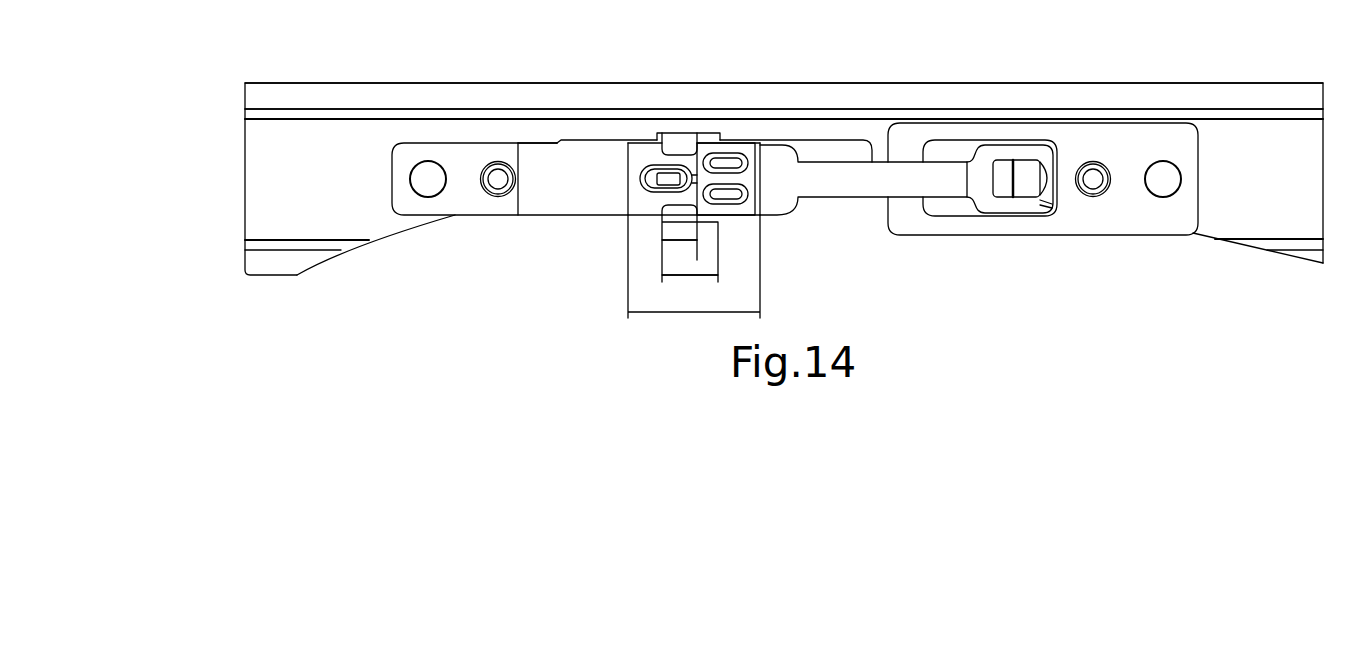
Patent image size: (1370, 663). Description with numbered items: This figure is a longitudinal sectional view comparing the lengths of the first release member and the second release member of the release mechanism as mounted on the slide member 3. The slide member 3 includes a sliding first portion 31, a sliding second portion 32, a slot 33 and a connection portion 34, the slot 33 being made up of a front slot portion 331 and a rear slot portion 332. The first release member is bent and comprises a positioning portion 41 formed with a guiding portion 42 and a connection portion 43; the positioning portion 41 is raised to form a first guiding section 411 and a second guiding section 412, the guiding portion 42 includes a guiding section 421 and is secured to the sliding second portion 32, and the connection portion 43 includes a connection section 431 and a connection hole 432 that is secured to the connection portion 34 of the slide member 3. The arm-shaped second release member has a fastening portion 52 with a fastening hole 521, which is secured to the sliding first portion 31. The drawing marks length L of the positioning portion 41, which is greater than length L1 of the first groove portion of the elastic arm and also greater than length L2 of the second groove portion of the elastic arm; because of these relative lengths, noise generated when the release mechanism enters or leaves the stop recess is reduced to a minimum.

The slide member 3 is at (280, 257).
The sliding first portion 31 is at (1148, 109).
The sliding second portion 32 is at (465, 133).
The slot 33 is at (685, 133).
The front slot portion 331 is at (866, 148).
The rear slot portion 332 is at (555, 141).
The connection portion 34 is at (1032, 182).
The positioning portion 41 is at (648, 155).
The first guiding section 411 is at (745, 172).
The second guiding section 412 is at (638, 185).
The guiding portion 42 is at (465, 193).
The guiding section 421 is at (580, 155).
The connection portion 43 is at (1005, 158).
The connection section 431 is at (833, 178).
The connection hole 432 is at (1003, 187).
The fastening portion 52 is at (1142, 212).
The fastening hole 521 is at (950, 155).
The length of the positioning portion L is at (738, 311).
The length of the first groove portion L1 is at (683, 235).
The length of the second groove portion L2 is at (688, 272).